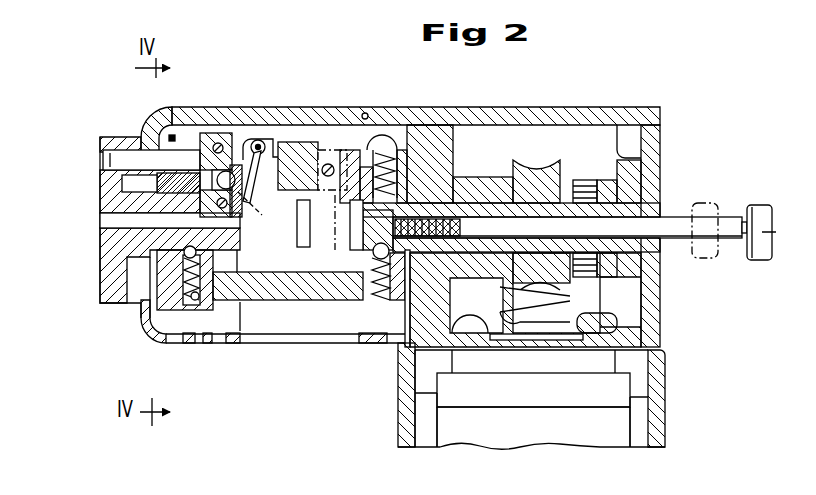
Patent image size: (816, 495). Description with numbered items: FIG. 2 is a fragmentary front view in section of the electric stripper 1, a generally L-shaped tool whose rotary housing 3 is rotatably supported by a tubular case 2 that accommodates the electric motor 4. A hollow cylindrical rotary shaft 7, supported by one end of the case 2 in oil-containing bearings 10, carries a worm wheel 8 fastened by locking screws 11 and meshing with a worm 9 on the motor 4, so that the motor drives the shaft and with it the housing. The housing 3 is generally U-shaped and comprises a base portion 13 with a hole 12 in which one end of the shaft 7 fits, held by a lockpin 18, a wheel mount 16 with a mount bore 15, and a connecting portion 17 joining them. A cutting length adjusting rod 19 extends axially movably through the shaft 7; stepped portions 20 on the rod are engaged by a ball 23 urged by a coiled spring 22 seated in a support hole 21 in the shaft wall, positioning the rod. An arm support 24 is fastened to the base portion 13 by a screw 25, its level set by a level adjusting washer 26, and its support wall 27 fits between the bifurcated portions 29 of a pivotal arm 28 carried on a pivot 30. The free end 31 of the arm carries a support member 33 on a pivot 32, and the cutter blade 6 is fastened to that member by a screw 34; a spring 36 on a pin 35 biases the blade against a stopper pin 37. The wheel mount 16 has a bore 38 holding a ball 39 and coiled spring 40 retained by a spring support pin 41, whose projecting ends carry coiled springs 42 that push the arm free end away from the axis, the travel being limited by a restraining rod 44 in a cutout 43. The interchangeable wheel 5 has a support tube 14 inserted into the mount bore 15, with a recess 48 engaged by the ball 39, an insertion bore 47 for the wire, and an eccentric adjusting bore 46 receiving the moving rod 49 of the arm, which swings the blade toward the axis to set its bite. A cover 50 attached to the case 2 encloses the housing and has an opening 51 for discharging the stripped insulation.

The electric stripper 1 is at (657, 98).
The case 2 is at (664, 384).
The rotary housing 3 is at (283, 316).
The electric motor 4 is at (607, 433).
The interchangeable wheel 5 is at (98, 305).
The cutter blade 6 is at (246, 210).
The rotary shaft 7 is at (645, 208).
The worm wheel 8 is at (537, 184).
The worm 9 is at (560, 312).
The oil-containing bearings 10 is at (458, 203).
The locking screws 11 is at (585, 186).
The hole 12 is at (454, 177).
The base portion 13 is at (432, 142).
The support tube 14 is at (112, 302).
The mount bore 15 is at (150, 195).
The wheel mount 16 is at (167, 290).
The connecting portion 17 is at (306, 287).
The lockpin 18 is at (388, 178).
The cutting length adjusting rod 19 is at (676, 227).
The stepped portions 20 is at (478, 246).
The support hole 21 is at (398, 302).
The coiled spring 22 is at (376, 290).
The ball 23 is at (367, 253).
The arm support 24 is at (371, 140).
The screw 25 is at (368, 168).
The level adjusting washer 26 is at (403, 162).
The support wall 27 is at (302, 158).
The pivotal arm 28 is at (324, 146).
The bifurcated portions 29 is at (325, 235).
The pivot 30 is at (327, 177).
The free end 31 is at (205, 138).
The pivot 32 is at (220, 142).
The support member 33 is at (230, 162).
The screw 34 is at (294, 141).
The pin 35 is at (304, 148).
The spring 36 is at (290, 223).
The stopper pin 37 is at (115, 246).
The bore 38 is at (196, 300).
The ball 39 is at (180, 303).
The coiled spring 40 is at (186, 300).
The spring support pin 41 is at (208, 300).
The coiled spring 42 is at (240, 316).
The cutout 43 is at (157, 137).
The restraining rod 44 is at (173, 136).
The adjusting bore 46 is at (120, 166).
The insertion bore 47 is at (108, 223).
The recess 48 is at (236, 262).
The moving rod 49 is at (120, 160).
The cover 50 is at (366, 112).
The opening 51 is at (234, 335).